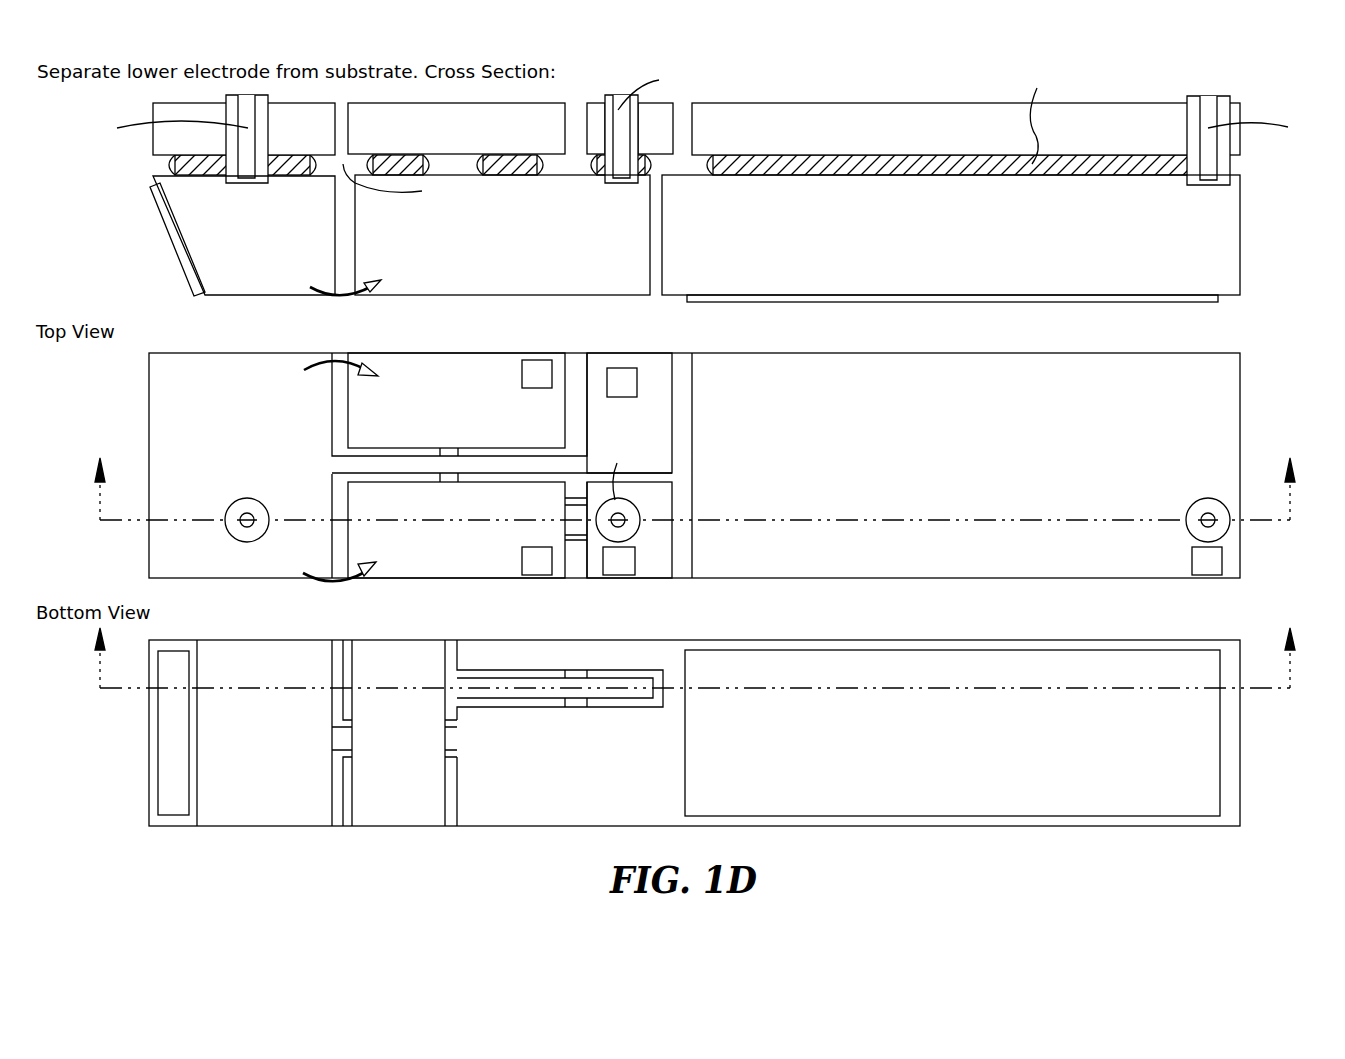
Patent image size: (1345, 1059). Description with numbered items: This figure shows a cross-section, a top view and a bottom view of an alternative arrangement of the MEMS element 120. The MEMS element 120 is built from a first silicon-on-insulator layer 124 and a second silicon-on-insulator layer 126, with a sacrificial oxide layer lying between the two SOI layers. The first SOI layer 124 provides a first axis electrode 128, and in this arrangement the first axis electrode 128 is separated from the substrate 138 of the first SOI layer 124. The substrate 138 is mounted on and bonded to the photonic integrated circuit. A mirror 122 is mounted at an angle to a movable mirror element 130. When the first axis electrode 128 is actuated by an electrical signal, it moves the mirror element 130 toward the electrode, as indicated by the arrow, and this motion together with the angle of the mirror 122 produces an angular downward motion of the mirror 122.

The MEMS element 120 is at (1202, 58).
The mirror 122 is at (172, 243).
The first silicon-on-insulator layer 124 is at (1242, 727).
The second silicon-on-insulator layer 126 is at (1227, 402).
The first axis electrode 128 is at (639, 283).
The mirror element 130 is at (325, 202).
The substrate 138 is at (1227, 233).